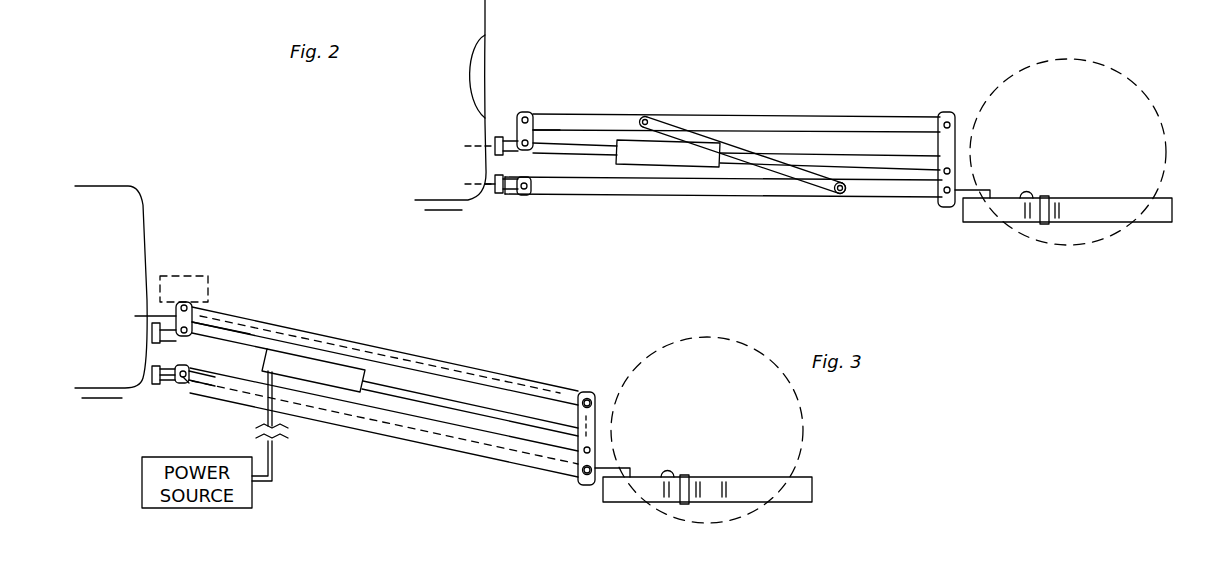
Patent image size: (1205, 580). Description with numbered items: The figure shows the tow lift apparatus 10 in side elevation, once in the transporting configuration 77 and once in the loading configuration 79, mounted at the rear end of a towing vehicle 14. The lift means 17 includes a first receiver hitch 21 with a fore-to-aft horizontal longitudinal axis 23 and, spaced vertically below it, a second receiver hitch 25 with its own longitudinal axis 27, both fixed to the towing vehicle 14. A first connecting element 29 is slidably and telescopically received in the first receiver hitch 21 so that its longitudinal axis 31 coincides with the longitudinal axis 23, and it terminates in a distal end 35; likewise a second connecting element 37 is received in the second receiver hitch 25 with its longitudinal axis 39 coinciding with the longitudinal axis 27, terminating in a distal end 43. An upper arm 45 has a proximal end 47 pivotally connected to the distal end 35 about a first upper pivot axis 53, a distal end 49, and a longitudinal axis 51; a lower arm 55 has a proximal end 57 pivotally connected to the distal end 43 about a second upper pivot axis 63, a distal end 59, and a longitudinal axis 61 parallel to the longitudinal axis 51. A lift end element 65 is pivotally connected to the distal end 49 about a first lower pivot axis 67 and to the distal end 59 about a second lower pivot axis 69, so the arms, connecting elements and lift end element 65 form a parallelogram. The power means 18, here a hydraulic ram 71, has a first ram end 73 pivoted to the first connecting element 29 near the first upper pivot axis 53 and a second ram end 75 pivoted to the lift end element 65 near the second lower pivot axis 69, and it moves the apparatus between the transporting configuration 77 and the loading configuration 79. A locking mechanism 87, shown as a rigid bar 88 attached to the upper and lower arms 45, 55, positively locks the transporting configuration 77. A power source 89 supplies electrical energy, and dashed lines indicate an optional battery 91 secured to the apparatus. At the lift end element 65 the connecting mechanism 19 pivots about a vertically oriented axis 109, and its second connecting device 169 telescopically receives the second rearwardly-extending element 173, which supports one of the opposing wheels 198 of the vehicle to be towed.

In FIG. 2, the tow lift apparatus 10 is at (696, 131).
In FIG. 3, the tow lift apparatus 10 is at (376, 365).
In FIG. 2, the towing vehicle 14 is at (484, 12).
In FIG. 3, the towing vehicle 14 is at (132, 188).
In FIG. 2, the lift means 17 is at (723, 139).
In FIG. 3, the lift means 17 is at (384, 382).
In FIG. 3, the power means 18 is at (306, 430).
In FIG. 2, the connecting mechanism 19 is at (1065, 186).
In FIG. 3, the connecting mechanism 19 is at (704, 466).
In FIG. 2, the first receiver hitch 21 is at (497, 136).
In FIG. 2, the longitudinal axis 23 is at (466, 145).
In FIG. 2, the second receiver hitch 25 is at (484, 196).
In FIG. 3, the second receiver hitch 25 is at (150, 384).
In FIG. 2, the longitudinal axis 27 is at (466, 183).
In FIG. 2, the first connecting element 29 is at (527, 112).
In FIG. 3, the first connecting element 29 is at (152, 316).
In FIG. 3, the longitudinal axis 31 is at (185, 337).
In FIG. 3, the distal end 35 is at (187, 304).
In FIG. 2, the second connecting element 37 is at (514, 196).
In FIG. 3, the second connecting element 37 is at (165, 368).
In FIG. 3, the longitudinal axis 39 is at (167, 379).
In FIG. 3, the distal end 43 is at (184, 380).
In FIG. 2, the upper arm 45 is at (874, 115).
In FIG. 3, the upper arm 45 is at (490, 378).
In FIG. 2, the proximal end 47 is at (542, 120).
In FIG. 3, the proximal end 47 is at (200, 314).
In FIG. 3, the distal end 49 is at (572, 396).
In FIG. 3, the longitudinal axis 51 is at (378, 352).
In FIG. 3, the first upper pivot axis 53 is at (176, 305).
In FIG. 2, the lower arm 55 is at (712, 192).
In FIG. 3, the lower arm 55 is at (424, 438).
In FIG. 2, the proximal end 57 is at (554, 192).
In FIG. 3, the proximal end 57 is at (196, 382).
In FIG. 3, the distal end 59 is at (572, 470).
In FIG. 3, the longitudinal axis 61 is at (355, 416).
In FIG. 3, the second upper pivot axis 63 is at (190, 372).
In FIG. 2, the lift end element 65 is at (944, 113).
In FIG. 3, the lift end element 65 is at (585, 392).
In FIG. 3, the first lower pivot axis 67 is at (592, 404).
In FIG. 3, the second lower pivot axis 69 is at (580, 478).
In FIG. 3, the hydraulic ram 71 is at (366, 383).
In FIG. 3, the first ram end 73 is at (238, 326).
In FIG. 3, the second ram end 75 is at (576, 440).
In FIG. 2, the transporting configuration 77 is at (742, 128).
In FIG. 3, the loading configuration 79 is at (420, 343).
In FIG. 2, the locking mechanism 87 is at (826, 192).
In FIG. 2, the rigid bar 88 is at (783, 165).
In FIG. 3, the power source 89 is at (185, 272).
In FIG. 3, the battery 91 is at (214, 285).
In FIG. 3, the vertically oriented axis 109 is at (588, 432).
In FIG. 2, the second connecting device 169 is at (986, 223).
In FIG. 3, the second connecting device 169 is at (614, 503).
In FIG. 2, the second rearwardly-extending element 173 is at (1157, 223).
In FIG. 3, the second rearwardly-extending element 173 is at (795, 503).
In FIG. 2, the opposing wheels 198 is at (1008, 80).
In FIG. 3, the opposing wheels 198 is at (752, 350).